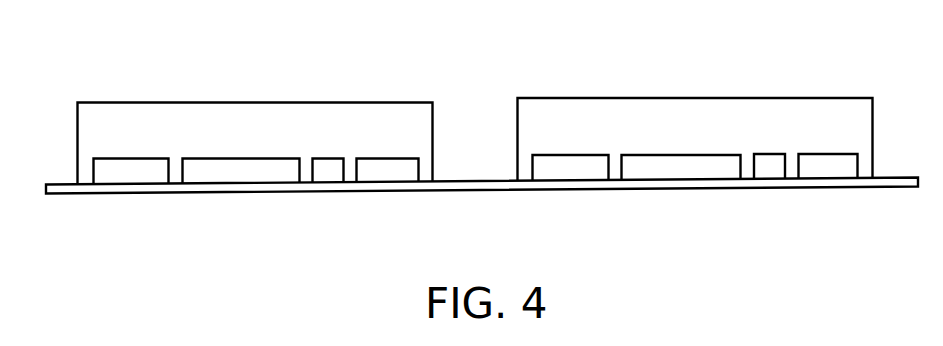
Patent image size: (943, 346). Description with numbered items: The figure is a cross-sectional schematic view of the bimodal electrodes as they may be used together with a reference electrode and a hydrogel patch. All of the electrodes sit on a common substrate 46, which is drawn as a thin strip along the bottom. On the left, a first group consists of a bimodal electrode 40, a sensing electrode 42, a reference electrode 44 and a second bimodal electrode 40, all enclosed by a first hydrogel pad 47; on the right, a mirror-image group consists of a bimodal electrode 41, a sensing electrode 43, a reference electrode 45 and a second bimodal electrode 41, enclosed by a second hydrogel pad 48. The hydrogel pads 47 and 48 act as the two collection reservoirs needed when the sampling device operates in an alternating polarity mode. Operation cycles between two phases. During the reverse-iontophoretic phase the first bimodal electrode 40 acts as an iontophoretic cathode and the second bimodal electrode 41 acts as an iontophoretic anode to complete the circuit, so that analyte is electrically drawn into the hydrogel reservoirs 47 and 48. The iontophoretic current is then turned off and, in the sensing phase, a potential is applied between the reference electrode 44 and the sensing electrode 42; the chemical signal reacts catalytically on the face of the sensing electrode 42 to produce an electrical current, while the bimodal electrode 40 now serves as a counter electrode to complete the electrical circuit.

The bimodal electrode 40 is at (133, 172).
The bimodal electrode 41 is at (562, 170).
The sensing electrode 42 is at (219, 172).
The sensing electrode 43 is at (661, 170).
The reference electrode 44 is at (331, 172).
The reference electrode 45 is at (770, 170).
The substrate 46 is at (470, 183).
The hydrogel pad 47 is at (243, 122).
The hydrogel pad 48 is at (712, 123).